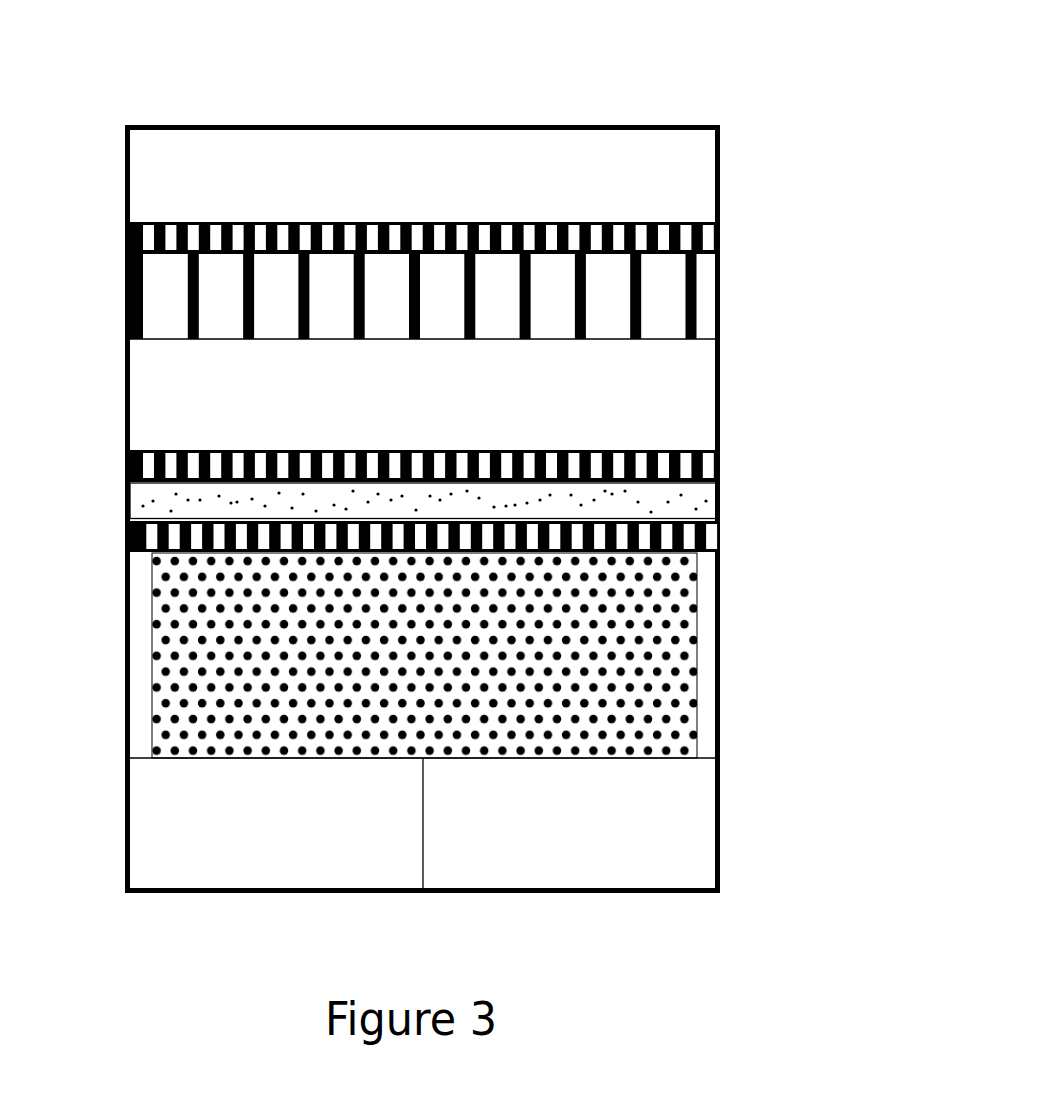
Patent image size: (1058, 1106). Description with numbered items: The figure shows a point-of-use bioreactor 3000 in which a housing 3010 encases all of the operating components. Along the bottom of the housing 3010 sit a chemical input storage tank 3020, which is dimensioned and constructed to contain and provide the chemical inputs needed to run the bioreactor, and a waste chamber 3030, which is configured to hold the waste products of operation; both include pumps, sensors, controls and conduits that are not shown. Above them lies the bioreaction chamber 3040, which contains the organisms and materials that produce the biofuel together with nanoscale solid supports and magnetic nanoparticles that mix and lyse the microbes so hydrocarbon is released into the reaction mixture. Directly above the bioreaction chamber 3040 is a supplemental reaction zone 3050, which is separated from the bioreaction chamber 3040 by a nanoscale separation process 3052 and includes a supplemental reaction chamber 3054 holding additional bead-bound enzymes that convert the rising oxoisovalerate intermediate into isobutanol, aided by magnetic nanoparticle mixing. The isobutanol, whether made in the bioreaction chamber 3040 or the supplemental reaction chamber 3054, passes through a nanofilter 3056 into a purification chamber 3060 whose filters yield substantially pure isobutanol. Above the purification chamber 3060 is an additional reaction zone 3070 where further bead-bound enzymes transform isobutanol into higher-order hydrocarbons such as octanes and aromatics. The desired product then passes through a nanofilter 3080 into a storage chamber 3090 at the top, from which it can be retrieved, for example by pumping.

The bioreactor 3000 is at (315, 82).
The housing 3010 is at (720, 132).
The storage chamber 3090 is at (443, 188).
The nanofilter 3080 is at (720, 245).
The additional reaction zone 3070 is at (125, 307).
The purification chamber 3060 is at (441, 408).
The supplemental reaction zone 3050 is at (471, 464).
The nanofilter 3056 is at (722, 467).
The supplemental reaction chamber 3054 is at (722, 510).
The nanoscale separation process 3052 is at (722, 535).
The bioreaction chamber 3040 is at (703, 690).
The chemical input storage tank 3020 is at (293, 826).
The waste chamber 3030 is at (583, 826).